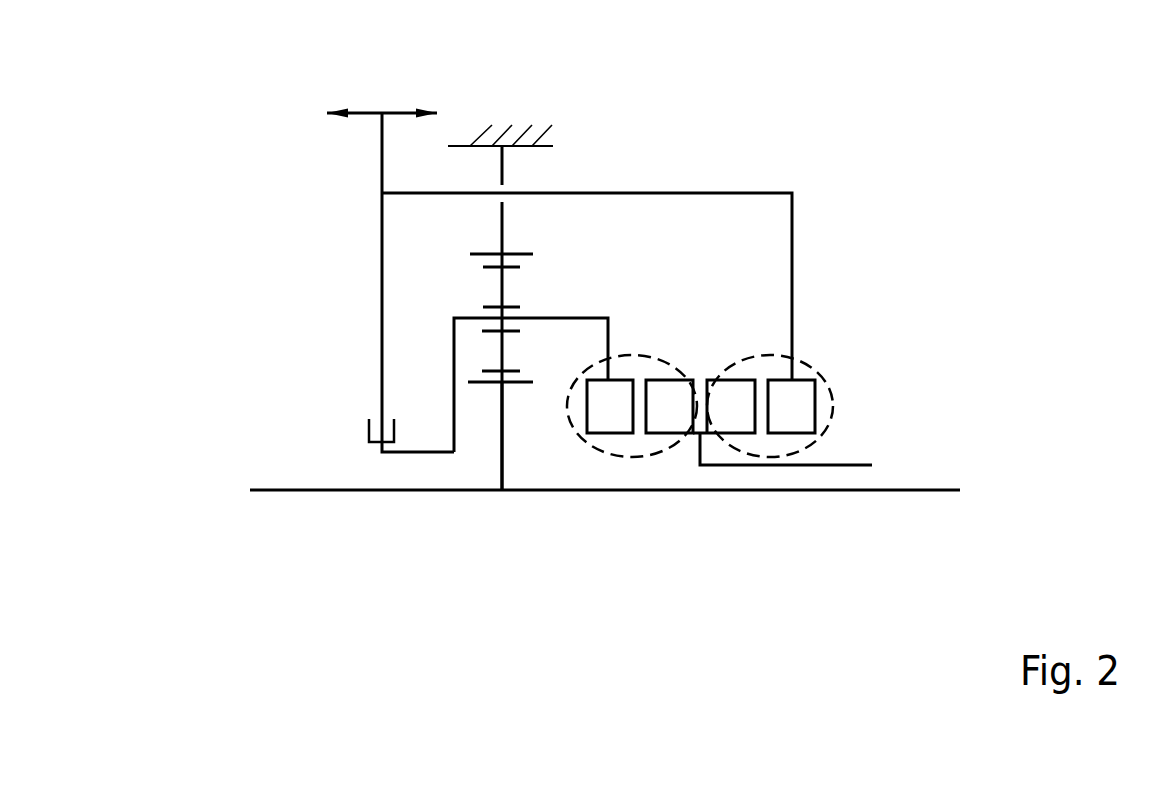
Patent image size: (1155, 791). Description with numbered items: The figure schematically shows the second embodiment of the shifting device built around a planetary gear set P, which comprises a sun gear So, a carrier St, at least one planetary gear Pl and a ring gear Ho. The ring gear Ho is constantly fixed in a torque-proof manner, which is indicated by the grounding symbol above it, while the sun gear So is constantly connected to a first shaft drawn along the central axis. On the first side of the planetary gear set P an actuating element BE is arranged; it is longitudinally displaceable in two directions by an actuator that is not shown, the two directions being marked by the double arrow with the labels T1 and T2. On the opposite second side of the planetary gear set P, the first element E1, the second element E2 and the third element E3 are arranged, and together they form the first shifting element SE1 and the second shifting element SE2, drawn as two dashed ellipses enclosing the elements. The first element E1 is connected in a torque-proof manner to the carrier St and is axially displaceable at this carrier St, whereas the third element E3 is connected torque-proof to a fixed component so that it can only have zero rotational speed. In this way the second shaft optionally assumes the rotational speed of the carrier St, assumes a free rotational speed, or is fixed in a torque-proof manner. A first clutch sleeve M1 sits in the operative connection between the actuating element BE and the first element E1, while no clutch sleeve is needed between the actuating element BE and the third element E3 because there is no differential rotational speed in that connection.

The actuating element BE is at (382, 272).
The first shift direction T1 is at (409, 93).
The second shift direction T2 is at (354, 93).
The ring gear Ho is at (520, 253).
The planetary gear Pl is at (502, 287).
The carrier St is at (550, 320).
The sun gear So is at (485, 385).
The planetary gear set P is at (502, 503).
The first clutch sleeve M1 is at (373, 447).
The first element E1 is at (618, 392).
The second element E2 is at (702, 390).
The third element E3 is at (795, 410).
The first shifting element SE1 is at (645, 458).
The second shifting element SE2 is at (757, 458).